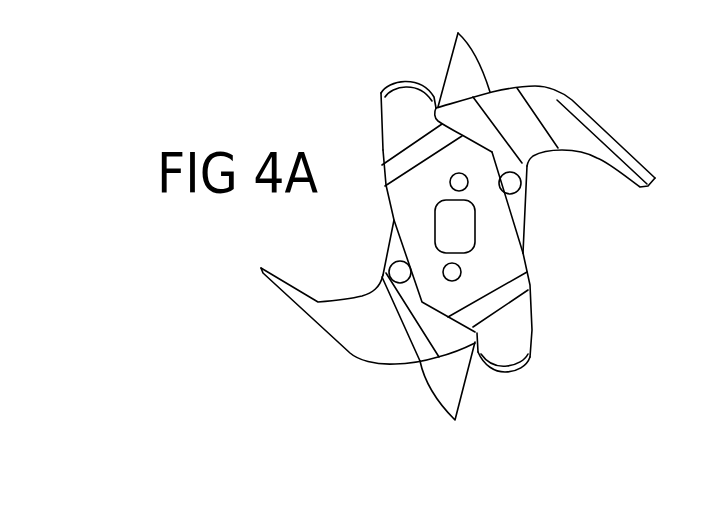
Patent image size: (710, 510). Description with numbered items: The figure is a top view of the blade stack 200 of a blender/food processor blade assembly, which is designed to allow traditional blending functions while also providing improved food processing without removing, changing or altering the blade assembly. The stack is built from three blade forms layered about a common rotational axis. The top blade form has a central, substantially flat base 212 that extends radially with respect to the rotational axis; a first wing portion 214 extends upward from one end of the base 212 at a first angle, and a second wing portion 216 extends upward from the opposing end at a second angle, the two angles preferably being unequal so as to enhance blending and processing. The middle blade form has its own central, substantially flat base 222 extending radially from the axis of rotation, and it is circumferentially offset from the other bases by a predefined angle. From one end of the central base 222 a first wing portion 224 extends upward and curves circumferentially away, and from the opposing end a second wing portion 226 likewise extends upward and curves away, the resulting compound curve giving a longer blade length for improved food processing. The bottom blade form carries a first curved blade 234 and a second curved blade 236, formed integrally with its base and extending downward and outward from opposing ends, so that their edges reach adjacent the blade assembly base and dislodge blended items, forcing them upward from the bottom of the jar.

The blade stack 200 is at (320, 116).
The base 212 is at (505, 258).
The first wing portion 214 is at (532, 344).
The second wing portion 216 is at (415, 127).
The central base 222 is at (392, 238).
The first wing portion 224 is at (616, 141).
The second wing portion 226 is at (297, 306).
The first curved blade 234 is at (463, 392).
The second curved blade 236 is at (472, 48).